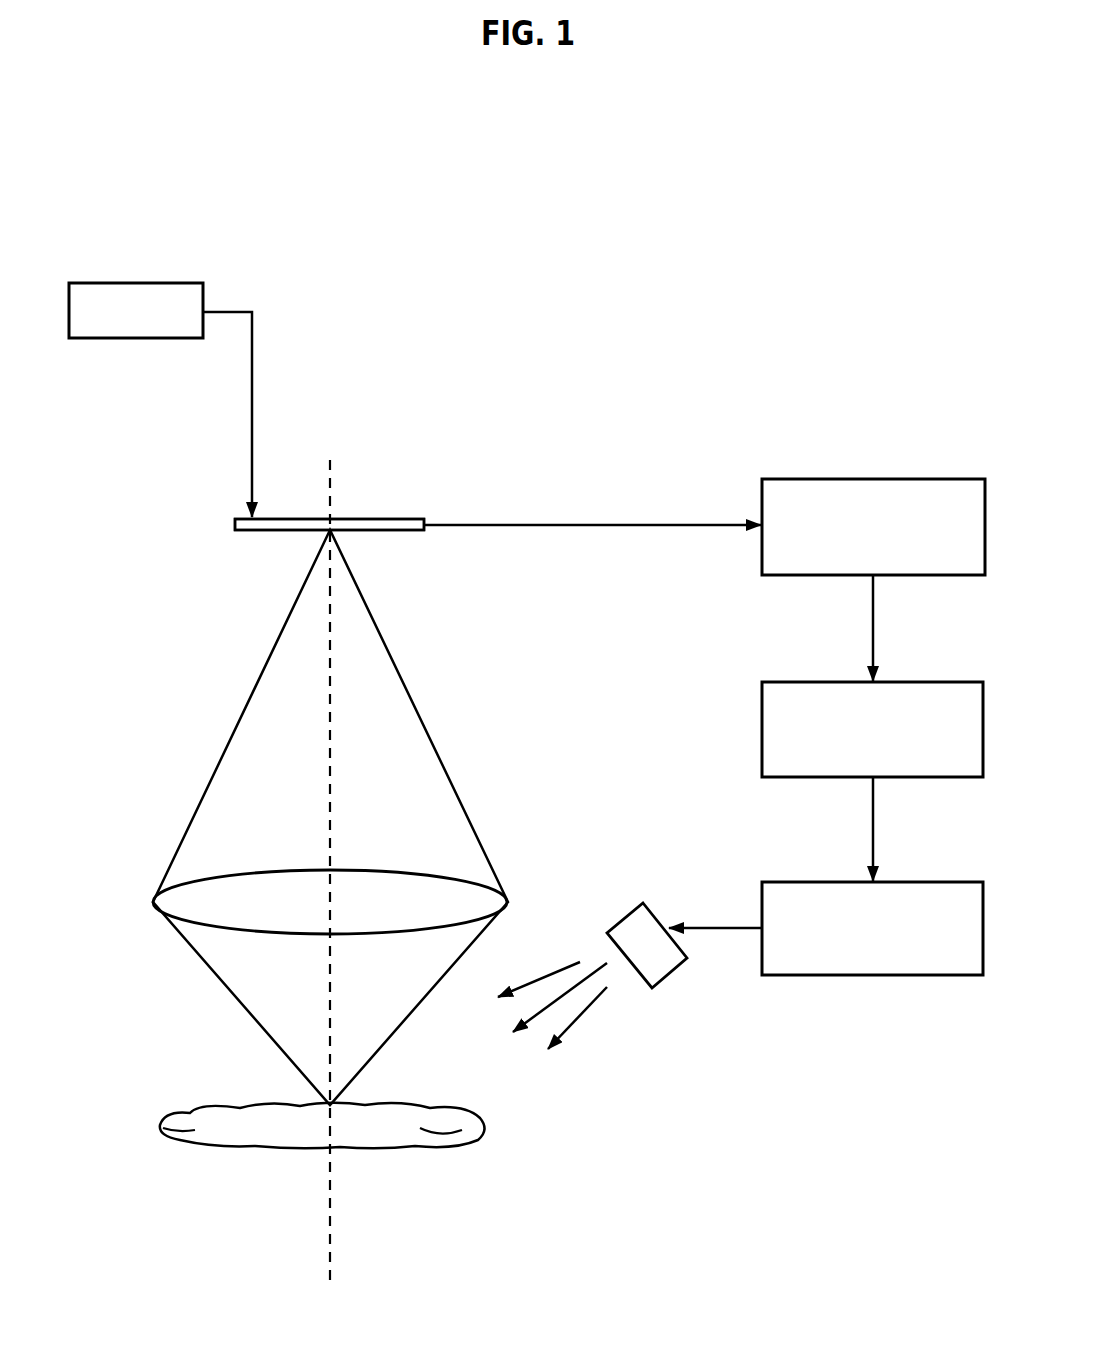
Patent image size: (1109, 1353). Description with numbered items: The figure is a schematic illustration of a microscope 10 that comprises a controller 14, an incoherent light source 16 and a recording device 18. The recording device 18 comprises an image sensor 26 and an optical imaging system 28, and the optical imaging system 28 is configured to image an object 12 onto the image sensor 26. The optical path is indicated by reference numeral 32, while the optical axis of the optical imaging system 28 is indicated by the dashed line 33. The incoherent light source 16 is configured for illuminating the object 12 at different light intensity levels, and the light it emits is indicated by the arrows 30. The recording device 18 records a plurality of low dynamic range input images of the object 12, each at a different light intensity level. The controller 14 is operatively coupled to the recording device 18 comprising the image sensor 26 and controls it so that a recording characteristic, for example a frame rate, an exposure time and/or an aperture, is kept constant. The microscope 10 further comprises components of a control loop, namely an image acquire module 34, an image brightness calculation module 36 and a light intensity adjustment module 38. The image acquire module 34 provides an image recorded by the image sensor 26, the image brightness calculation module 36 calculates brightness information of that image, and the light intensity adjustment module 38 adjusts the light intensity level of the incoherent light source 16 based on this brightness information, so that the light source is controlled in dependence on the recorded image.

The microscope 10 is at (168, 177).
The object 12 is at (170, 1118).
The controller 14 is at (121, 340).
The incoherent light source 16 is at (668, 970).
The recording device 18 is at (228, 527).
The image sensor 26 is at (392, 517).
The optical imaging system 28 is at (200, 880).
The light emitted by the incoherent light source 30 is at (602, 1048).
The optical path 32 is at (455, 745).
The optical axis 33 is at (330, 1247).
The image acquire module 34 is at (913, 478).
The image brightness calculation module 36 is at (762, 712).
The light intensity adjustment module 38 is at (930, 975).